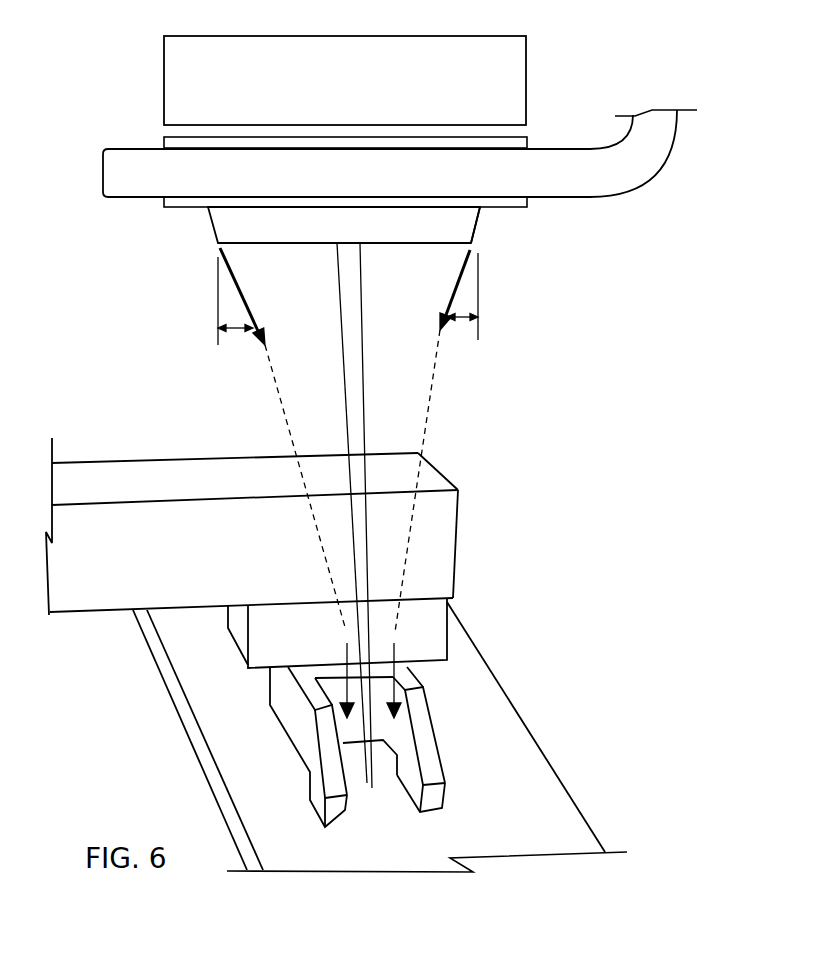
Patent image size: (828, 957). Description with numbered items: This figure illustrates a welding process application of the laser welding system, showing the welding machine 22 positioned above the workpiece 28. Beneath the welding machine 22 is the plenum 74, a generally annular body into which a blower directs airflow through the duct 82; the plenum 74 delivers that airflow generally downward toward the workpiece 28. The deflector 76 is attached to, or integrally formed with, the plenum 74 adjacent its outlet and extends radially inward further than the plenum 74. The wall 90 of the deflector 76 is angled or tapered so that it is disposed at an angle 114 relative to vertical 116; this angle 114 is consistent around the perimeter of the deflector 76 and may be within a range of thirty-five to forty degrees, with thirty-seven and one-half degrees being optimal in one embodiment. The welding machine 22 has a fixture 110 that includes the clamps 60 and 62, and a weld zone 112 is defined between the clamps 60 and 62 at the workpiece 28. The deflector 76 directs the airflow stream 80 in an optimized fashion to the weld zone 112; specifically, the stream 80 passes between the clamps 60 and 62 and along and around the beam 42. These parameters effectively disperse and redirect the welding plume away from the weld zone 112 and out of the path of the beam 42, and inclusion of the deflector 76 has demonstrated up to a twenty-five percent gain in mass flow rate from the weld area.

The welding machine 22 is at (345, 80).
The plenum 74 is at (390, 158).
The deflector 76 is at (344, 225).
The duct 82 is at (656, 128).
The wall 90 is at (477, 221).
The beam 42 is at (356, 298).
The vertical 116 is at (218, 285).
The angle 114 is at (237, 333).
The fixture 110 is at (252, 526).
The airflow stream 80 is at (407, 697).
The clamp 60 is at (327, 767).
The clamp 62 is at (427, 745).
The weld zone 112 is at (370, 795).
The workpiece 28 is at (538, 805).